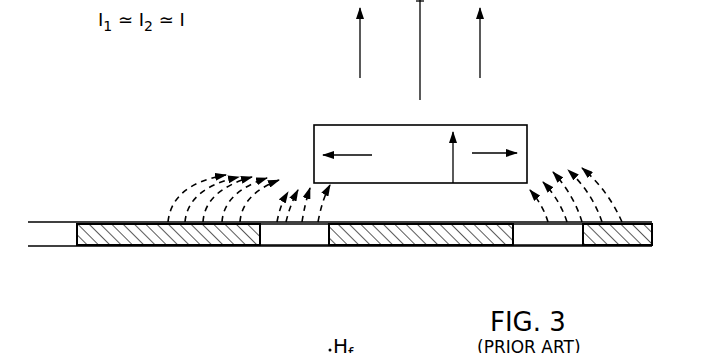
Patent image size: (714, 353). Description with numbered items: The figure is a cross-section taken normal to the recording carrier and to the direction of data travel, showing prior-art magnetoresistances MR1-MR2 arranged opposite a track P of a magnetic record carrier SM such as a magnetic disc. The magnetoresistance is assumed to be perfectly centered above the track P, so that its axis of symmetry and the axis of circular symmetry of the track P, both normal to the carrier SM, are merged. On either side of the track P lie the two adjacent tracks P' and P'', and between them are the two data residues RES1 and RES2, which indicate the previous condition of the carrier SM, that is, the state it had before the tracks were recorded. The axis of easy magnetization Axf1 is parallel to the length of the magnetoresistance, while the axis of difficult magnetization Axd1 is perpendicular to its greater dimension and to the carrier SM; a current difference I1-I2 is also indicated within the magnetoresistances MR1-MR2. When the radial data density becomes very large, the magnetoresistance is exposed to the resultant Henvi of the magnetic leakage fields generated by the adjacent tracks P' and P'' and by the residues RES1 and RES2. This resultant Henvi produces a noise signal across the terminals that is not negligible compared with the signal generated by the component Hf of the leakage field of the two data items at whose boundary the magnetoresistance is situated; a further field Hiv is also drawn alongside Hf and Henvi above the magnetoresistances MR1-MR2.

The adjacent track P' is at (168, 262).
The track P is at (421, 263).
The adjacent track P'' is at (618, 254).
The data residue RES1 is at (302, 247).
The data residue RES2 is at (528, 246).
The magnetic record carrier SM is at (558, 246).
The magnetoresistances MR1-MR2 is at (527, 143).
The intrinsic vertical field Hiv is at (332, 49).
The leakage field component Hf is at (431, 56).
The resultant of the magnetic leakage fields Henvi is at (508, 49).
The axis of easy magnetization Axf1 is at (352, 170).
The axis of difficult magnetization Axd1 is at (439, 157).
The current difference I1-I2 is at (495, 167).